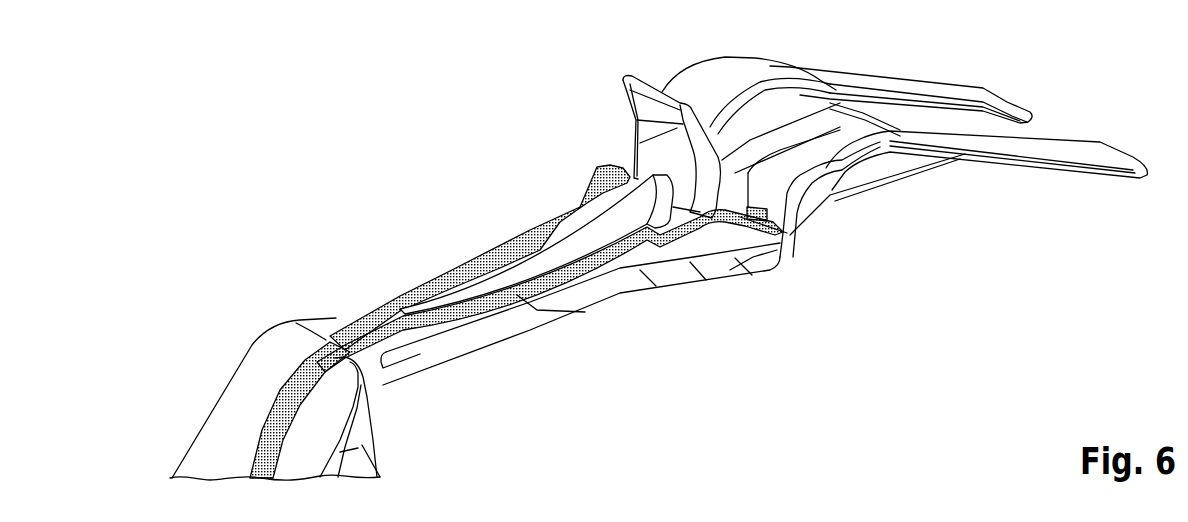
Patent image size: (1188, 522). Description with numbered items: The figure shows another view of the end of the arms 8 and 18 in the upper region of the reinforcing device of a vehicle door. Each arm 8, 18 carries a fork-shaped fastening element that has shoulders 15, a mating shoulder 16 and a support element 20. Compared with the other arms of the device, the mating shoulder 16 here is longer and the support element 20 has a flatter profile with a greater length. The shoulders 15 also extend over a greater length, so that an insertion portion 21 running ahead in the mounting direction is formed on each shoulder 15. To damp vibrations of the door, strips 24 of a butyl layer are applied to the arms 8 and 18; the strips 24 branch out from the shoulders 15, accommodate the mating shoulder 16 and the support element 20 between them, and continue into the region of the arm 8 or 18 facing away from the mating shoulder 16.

The arm 8 is at (454, 361).
The arm 18 is at (243, 395).
The shoulder 15 is at (728, 70).
The mating shoulder 16 is at (648, 87).
The support element 20 is at (533, 252).
The insertion portion 21 is at (892, 80).
The strips 24 is at (298, 378).